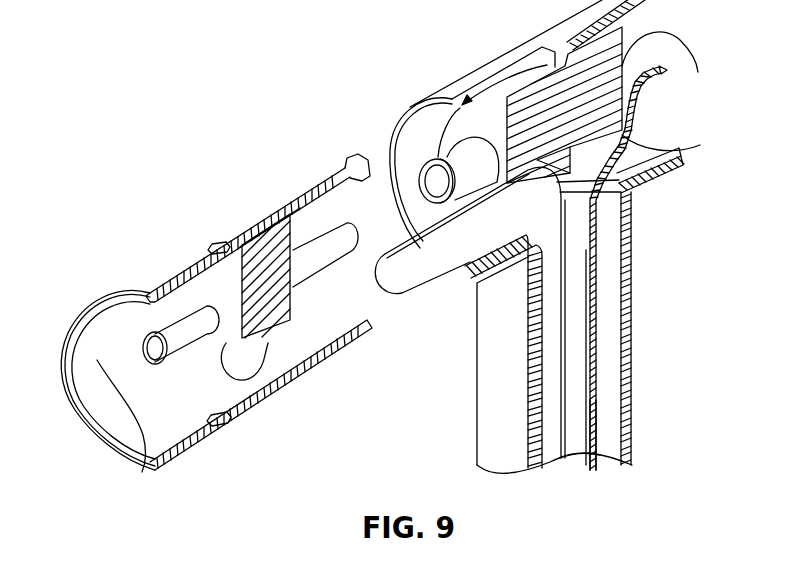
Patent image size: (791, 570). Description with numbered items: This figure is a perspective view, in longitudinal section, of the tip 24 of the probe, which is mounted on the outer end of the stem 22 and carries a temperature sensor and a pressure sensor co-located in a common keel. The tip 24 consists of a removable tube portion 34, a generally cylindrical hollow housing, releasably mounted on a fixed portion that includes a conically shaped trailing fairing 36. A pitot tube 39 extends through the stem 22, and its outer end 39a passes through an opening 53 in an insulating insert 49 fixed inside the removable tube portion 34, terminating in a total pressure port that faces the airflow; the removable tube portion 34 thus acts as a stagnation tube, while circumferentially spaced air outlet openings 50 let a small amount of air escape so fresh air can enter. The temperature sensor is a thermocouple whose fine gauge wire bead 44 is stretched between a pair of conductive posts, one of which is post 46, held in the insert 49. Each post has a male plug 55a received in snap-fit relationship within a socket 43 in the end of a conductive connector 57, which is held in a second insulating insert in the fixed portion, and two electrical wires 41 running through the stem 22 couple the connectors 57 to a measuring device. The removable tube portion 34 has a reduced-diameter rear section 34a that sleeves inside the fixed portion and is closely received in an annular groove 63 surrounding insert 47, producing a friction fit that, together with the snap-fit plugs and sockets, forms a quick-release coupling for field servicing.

The stem 22 is at (612, 444).
The tip 24 is at (308, 77).
The removable tube portion 34 is at (232, 232).
The rear section 34a is at (314, 250).
The trailing fairing 36 is at (673, 0).
The pitot tube 39 is at (592, 456).
The outer end 39a is at (428, 257).
The electrical wires 41 is at (595, 403).
The socket 43 is at (430, 171).
The wire bead 44 is at (98, 443).
The conductive post 46 is at (146, 348).
The insert 47 is at (637, 163).
The insulating insert 49 is at (232, 393).
The air outlet openings 50 is at (201, 236).
The opening 53 is at (222, 376).
The partition wall 55a is at (268, 192).
The conductive connector 57 is at (655, 60).
The annular groove 63 is at (633, 122).